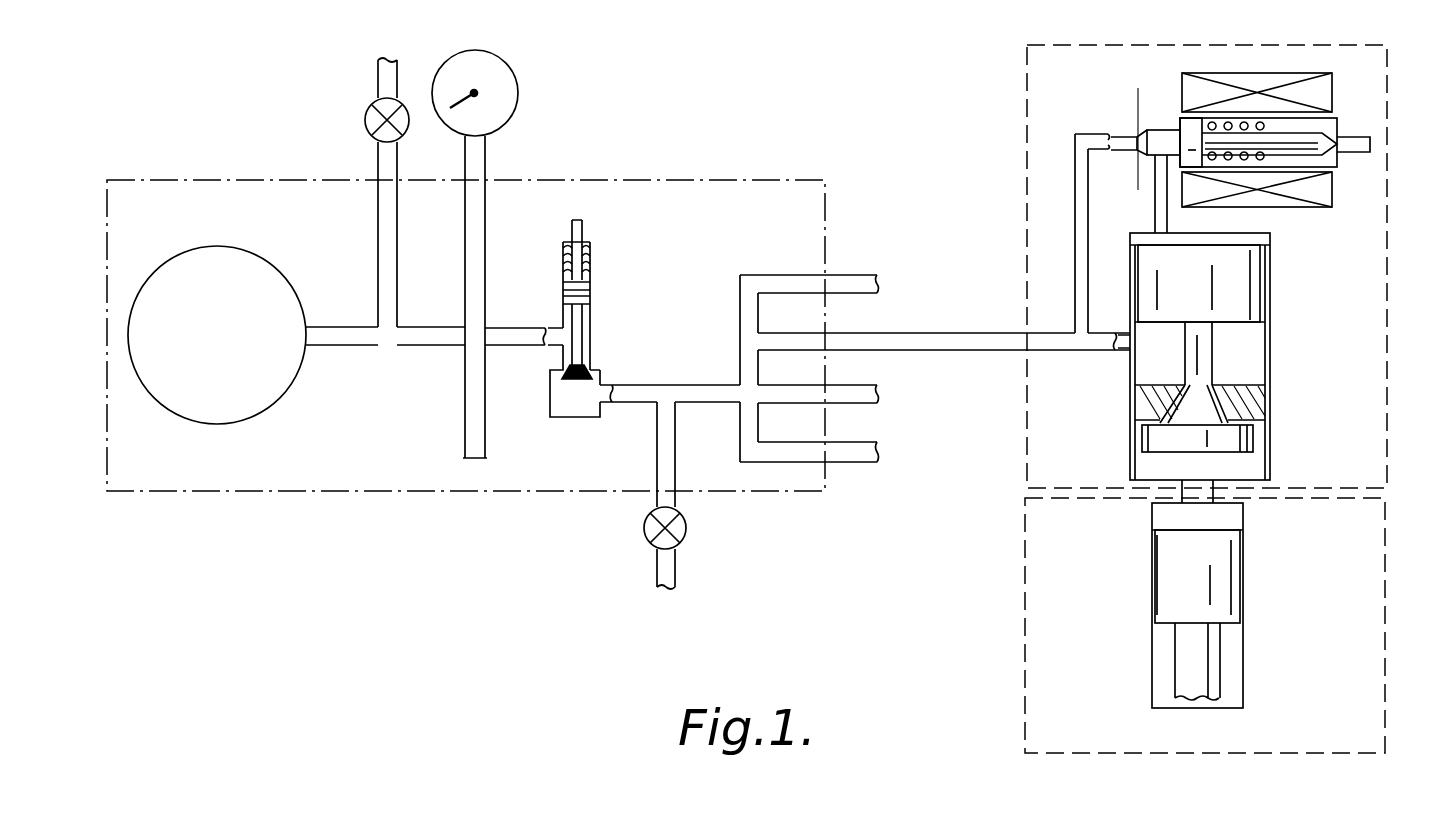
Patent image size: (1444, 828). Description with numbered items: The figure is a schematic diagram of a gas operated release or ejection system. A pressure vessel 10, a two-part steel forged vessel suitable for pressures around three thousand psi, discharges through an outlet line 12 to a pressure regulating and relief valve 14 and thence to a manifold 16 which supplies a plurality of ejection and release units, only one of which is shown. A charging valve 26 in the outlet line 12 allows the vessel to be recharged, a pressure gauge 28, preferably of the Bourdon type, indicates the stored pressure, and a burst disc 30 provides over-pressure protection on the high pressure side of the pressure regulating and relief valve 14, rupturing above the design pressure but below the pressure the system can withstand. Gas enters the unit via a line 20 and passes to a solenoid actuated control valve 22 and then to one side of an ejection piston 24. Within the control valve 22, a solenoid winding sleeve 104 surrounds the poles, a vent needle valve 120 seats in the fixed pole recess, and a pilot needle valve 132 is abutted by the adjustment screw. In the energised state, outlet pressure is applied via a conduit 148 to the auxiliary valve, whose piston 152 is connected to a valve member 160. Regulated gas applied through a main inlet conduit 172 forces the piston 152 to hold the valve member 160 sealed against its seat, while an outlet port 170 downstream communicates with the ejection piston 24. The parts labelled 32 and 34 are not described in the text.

The pressure vessel 10 is at (231, 349).
The outlet line 12 is at (330, 346).
The pressure regulating and relief valve 14 is at (561, 251).
The manifold 16 is at (852, 276).
The line 20 is at (931, 333).
The solenoid actuated control valve 22 is at (1388, 289).
The ejection piston 24 is at (1245, 581).
The charging valve 26 is at (368, 112).
The pressure gauge 28 is at (518, 78).
The burst disc 30 is at (475, 462).
The valve member 32 is at (590, 368).
The valve housing 34 is at (550, 387).
The solenoid winding sleeve 104 is at (1232, 78).
The vent needle valve 120 is at (1307, 132).
The pilot needle valve 132 is at (1158, 138).
The conduit 148 is at (1155, 200).
The piston 152 is at (1258, 273).
The valve member 160 is at (1255, 441).
The outlet port 170 is at (1195, 500).
The main inlet conduit 172 is at (1122, 352).